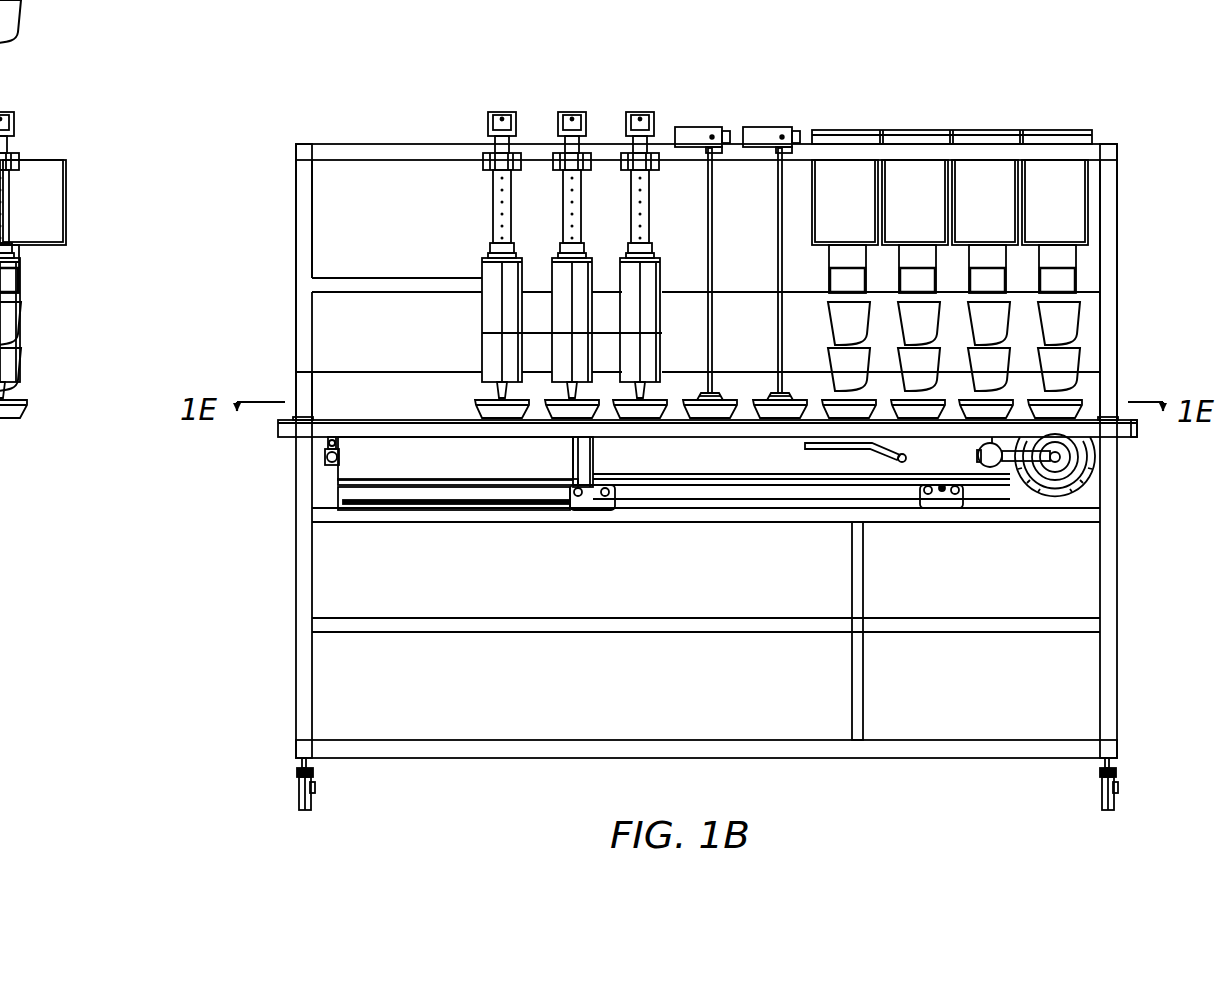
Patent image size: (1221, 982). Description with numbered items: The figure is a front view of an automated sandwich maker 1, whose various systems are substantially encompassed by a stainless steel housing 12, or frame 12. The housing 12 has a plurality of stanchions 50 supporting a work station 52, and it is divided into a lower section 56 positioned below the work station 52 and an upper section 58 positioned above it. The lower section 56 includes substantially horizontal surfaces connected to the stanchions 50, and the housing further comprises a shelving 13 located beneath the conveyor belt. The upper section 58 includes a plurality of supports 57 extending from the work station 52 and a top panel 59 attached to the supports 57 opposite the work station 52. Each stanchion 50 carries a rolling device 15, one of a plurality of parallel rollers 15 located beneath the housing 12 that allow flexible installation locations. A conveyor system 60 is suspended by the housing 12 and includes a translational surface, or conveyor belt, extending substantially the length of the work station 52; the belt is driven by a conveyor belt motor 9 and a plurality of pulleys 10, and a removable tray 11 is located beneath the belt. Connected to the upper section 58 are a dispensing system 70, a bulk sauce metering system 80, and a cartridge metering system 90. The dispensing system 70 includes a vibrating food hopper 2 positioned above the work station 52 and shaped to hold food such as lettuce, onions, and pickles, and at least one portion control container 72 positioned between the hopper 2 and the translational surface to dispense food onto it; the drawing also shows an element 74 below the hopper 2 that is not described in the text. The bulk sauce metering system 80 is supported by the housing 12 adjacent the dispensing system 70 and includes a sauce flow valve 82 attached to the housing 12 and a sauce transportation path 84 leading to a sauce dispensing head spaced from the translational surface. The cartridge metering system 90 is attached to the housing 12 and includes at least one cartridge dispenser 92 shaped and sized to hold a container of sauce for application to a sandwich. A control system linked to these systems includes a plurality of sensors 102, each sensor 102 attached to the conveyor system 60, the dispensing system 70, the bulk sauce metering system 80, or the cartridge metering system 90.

The automated sandwich maker 1 is at (1178, 141).
The vibrating hopper 2 is at (916, 118).
The conveyor belt motor 9 is at (1012, 478).
The pulleys 10 is at (1060, 460).
The removable tray 11 is at (715, 503).
The housing 12 is at (281, 606).
The shelving 13 is at (535, 633).
The rollers 15 is at (297, 797).
The stanchions 50 is at (296, 741).
The work station 52 is at (285, 437).
The lower section 56 is at (1135, 558).
The supports 57 is at (296, 185).
The upper section 58 is at (285, 261).
The top panel 59 is at (297, 145).
The conveyor system 60 is at (1128, 471).
The dispensing system 70 is at (1100, 185).
The portion control container 72 is at (1058, 360).
The chute 74 is at (1058, 260).
The bulk sauce metering system 80 is at (722, 213).
The sauce flow valve 82 is at (781, 116).
The sauce transportation path 84 is at (766, 217).
The cartridge metering system 90 is at (568, 108).
The cartridge dispenser 92 is at (468, 252).
The sensor 102 is at (497, 233).